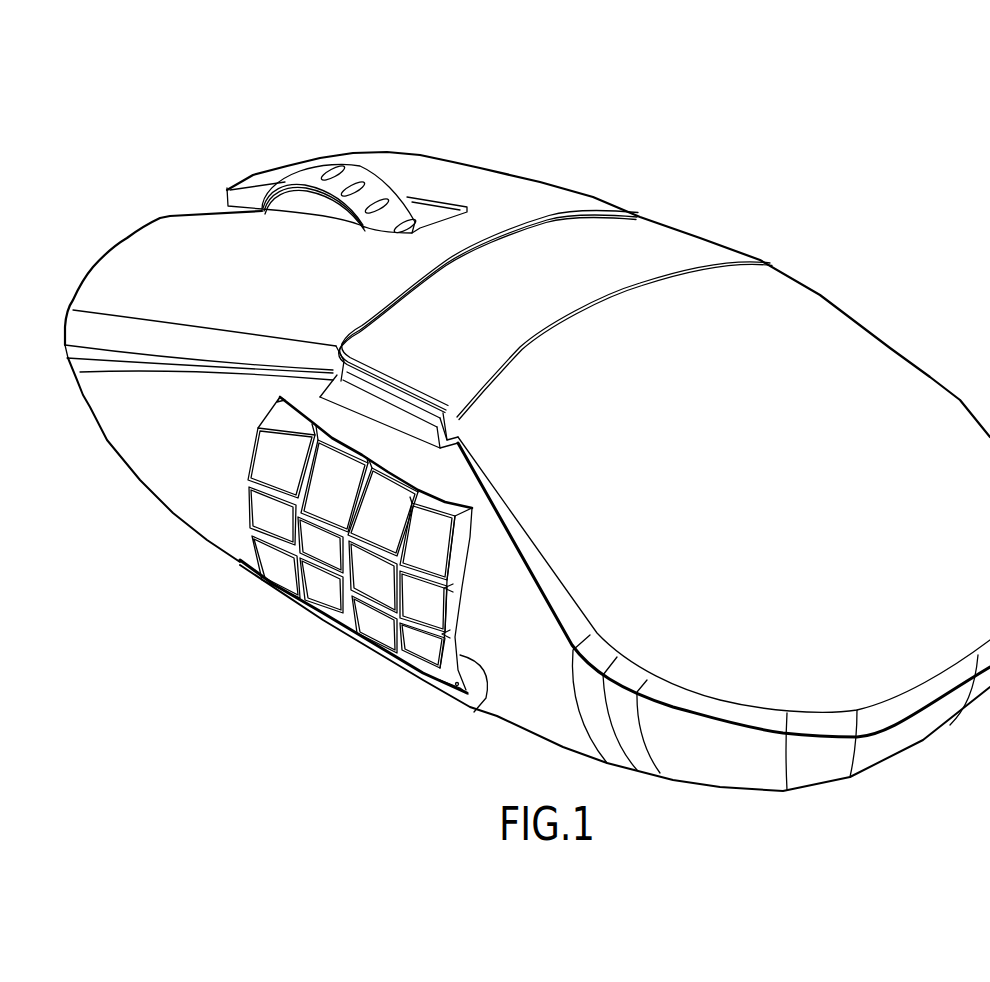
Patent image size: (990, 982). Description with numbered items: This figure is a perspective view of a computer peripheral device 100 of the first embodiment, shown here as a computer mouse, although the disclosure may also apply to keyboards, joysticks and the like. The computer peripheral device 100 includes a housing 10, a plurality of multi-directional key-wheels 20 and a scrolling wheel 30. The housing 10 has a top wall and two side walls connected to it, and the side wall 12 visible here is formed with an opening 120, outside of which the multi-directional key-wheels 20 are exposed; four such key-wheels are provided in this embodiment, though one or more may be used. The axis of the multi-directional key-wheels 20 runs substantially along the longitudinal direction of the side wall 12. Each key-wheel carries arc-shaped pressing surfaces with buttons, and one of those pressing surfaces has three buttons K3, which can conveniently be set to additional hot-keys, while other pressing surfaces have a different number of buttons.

The computer peripheral device 100 is at (97, 130).
The housing 10 is at (592, 199).
The side wall 12 is at (178, 467).
The scrolling wheel 30 is at (348, 169).
The multi-directional key-wheel 20 is at (277, 592).
The button K3 is at (277, 463).
The opening 120 is at (490, 672).